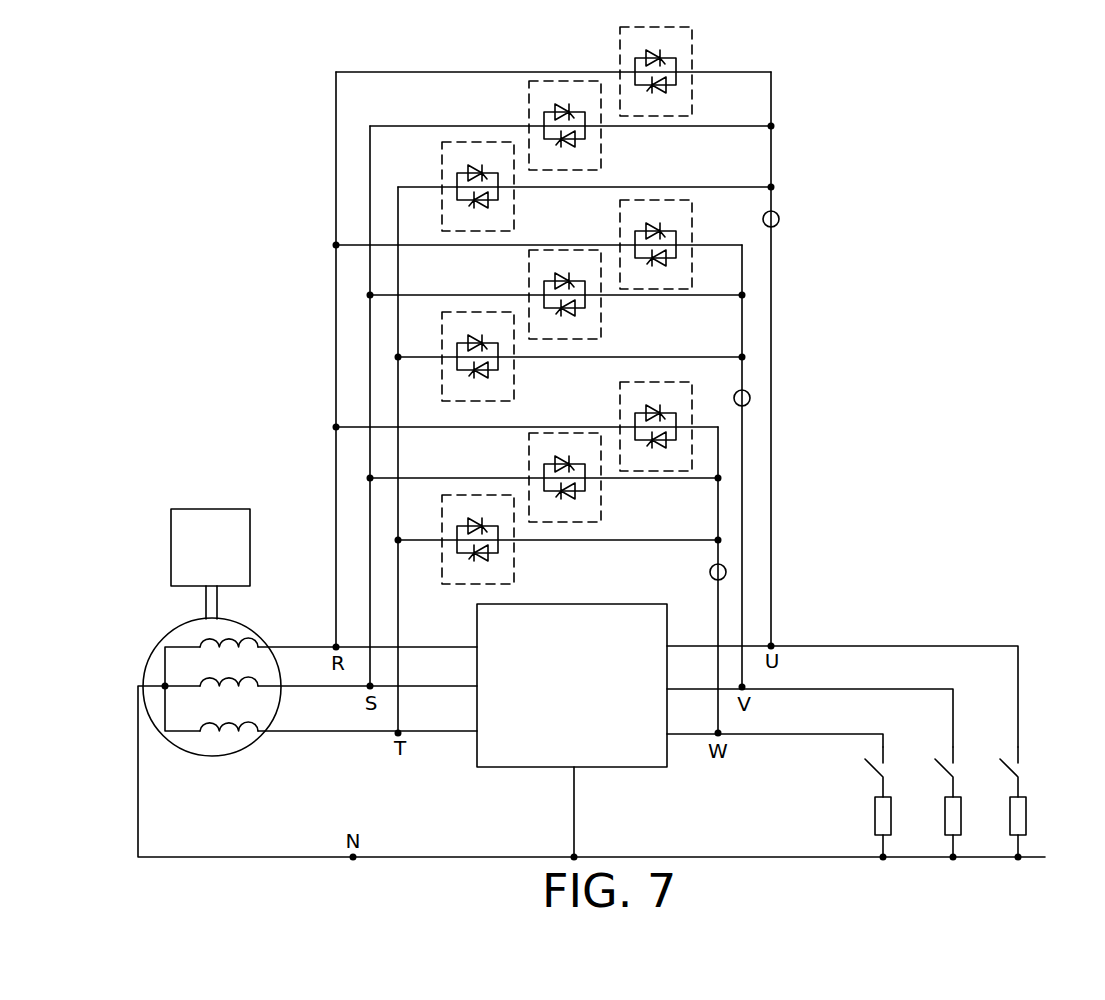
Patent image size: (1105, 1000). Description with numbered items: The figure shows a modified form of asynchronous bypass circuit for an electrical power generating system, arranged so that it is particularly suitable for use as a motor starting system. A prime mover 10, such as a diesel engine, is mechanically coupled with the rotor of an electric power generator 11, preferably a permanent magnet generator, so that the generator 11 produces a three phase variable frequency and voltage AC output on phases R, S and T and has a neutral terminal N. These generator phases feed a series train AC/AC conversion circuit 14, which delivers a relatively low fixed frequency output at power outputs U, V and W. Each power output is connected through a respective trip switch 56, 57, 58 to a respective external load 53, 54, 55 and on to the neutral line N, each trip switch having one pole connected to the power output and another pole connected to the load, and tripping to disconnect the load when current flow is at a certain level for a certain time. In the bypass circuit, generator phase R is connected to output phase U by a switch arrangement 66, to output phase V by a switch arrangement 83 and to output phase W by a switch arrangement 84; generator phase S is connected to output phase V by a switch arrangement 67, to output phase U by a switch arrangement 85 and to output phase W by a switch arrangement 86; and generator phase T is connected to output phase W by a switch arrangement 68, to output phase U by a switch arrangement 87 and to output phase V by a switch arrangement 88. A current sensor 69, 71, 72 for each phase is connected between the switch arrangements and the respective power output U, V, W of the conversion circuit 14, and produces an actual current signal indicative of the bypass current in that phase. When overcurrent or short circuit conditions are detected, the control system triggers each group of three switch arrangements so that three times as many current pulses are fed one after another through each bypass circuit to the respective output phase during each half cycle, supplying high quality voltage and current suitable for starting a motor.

The prime mover 10 is at (171, 523).
The electric power generator 11 is at (178, 627).
The series train AC/AC conversion circuit 14 is at (650, 767).
The external load 53 is at (1027, 814).
The external load 54 is at (944, 796).
The external load 55 is at (874, 814).
The trip switch 56 is at (1012, 766).
The trip switch 57 is at (943, 765).
The trip switch 58 is at (868, 766).
The switch arrangement 66 is at (693, 101).
The switch arrangement 67 is at (601, 322).
The switch arrangement 68 is at (514, 570).
The current sensor 69 is at (779, 219).
The current sensor 71 is at (750, 398).
The current sensor 72 is at (710, 571).
The switch arrangement 83 is at (693, 208).
The switch arrangement 84 is at (670, 382).
The switch arrangement 85 is at (603, 154).
The switch arrangement 86 is at (601, 509).
The switch arrangement 87 is at (516, 213).
The switch arrangement 88 is at (514, 385).